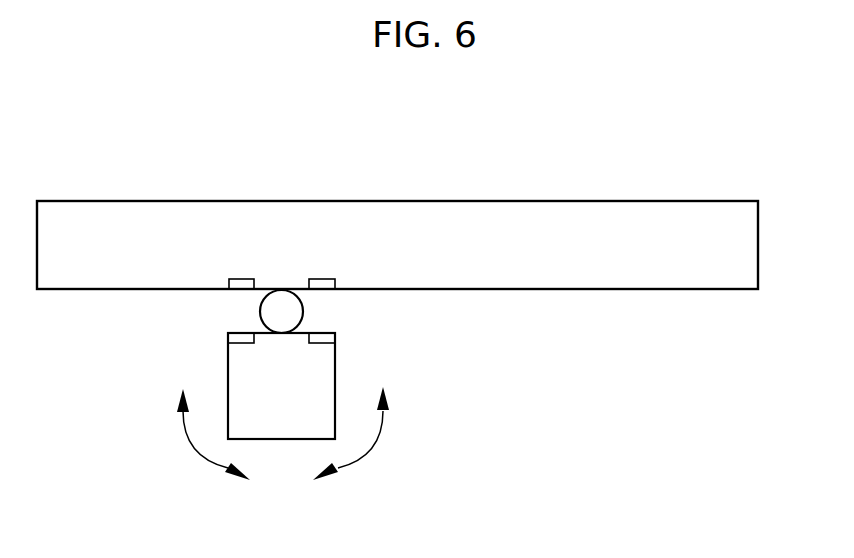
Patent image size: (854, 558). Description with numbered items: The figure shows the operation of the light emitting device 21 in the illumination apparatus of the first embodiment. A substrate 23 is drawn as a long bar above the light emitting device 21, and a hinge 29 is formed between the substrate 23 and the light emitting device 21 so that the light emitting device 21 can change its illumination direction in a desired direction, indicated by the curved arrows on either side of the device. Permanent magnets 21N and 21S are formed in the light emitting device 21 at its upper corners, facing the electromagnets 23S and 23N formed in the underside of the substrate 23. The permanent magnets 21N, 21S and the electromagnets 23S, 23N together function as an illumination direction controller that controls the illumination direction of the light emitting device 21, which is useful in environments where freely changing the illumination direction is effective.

The substrate 23 is at (751, 250).
The electromagnet 23S is at (240, 279).
The electromagnet 23N is at (313, 279).
The hinge 29 is at (298, 311).
The light emitting device 21 is at (323, 375).
The permanent magnet 21N is at (242, 335).
The permanent magnet 21S is at (331, 338).